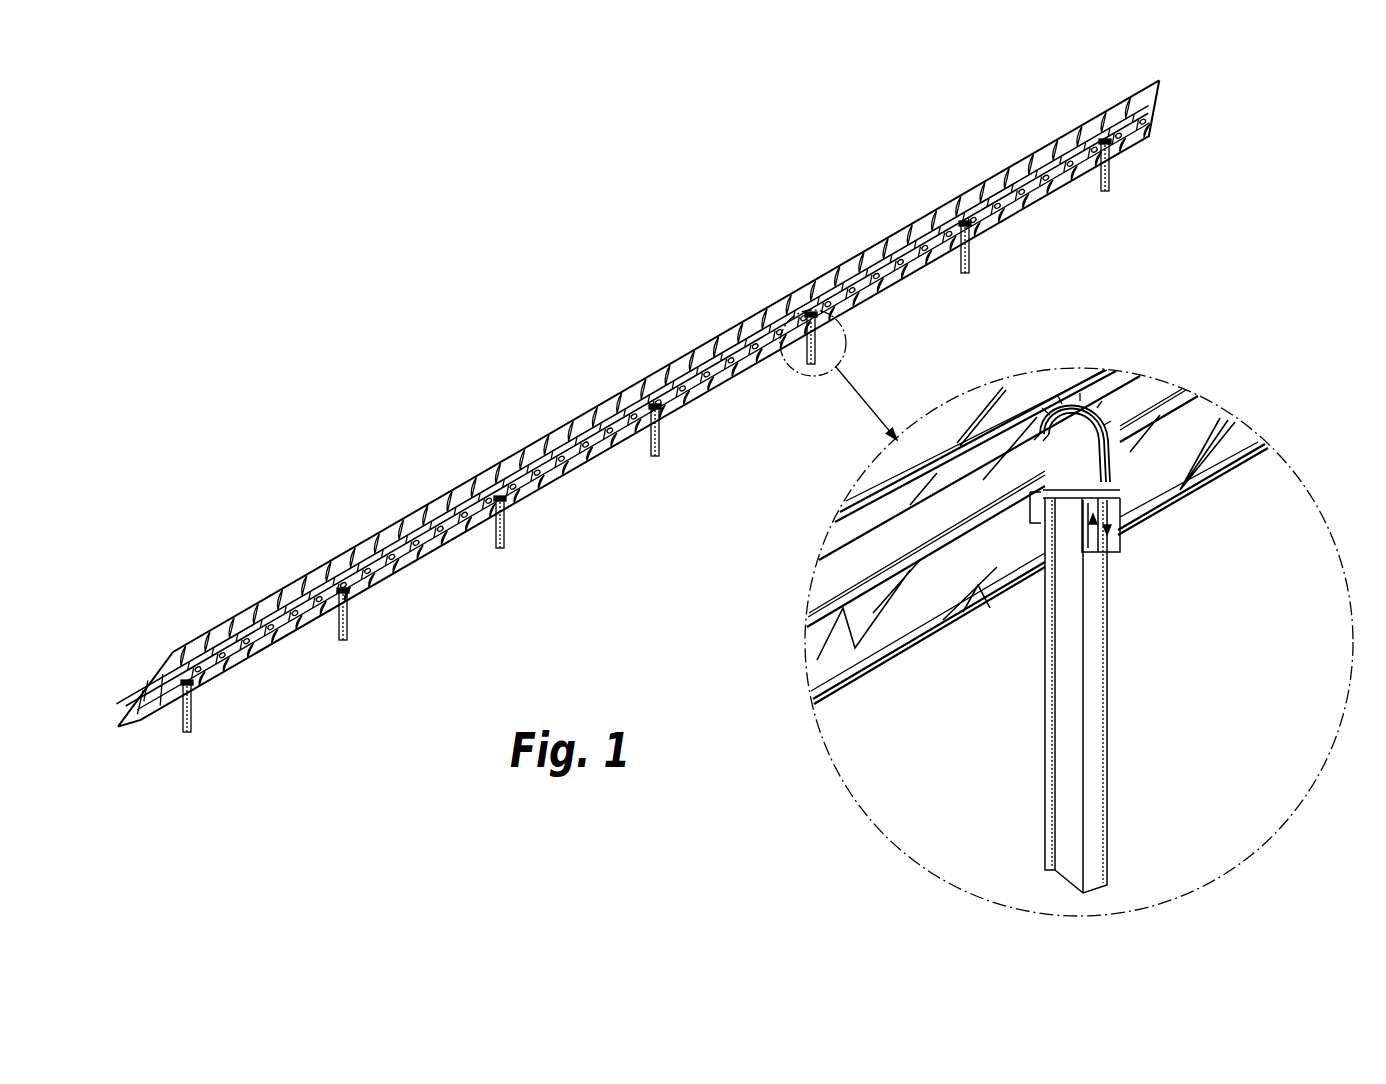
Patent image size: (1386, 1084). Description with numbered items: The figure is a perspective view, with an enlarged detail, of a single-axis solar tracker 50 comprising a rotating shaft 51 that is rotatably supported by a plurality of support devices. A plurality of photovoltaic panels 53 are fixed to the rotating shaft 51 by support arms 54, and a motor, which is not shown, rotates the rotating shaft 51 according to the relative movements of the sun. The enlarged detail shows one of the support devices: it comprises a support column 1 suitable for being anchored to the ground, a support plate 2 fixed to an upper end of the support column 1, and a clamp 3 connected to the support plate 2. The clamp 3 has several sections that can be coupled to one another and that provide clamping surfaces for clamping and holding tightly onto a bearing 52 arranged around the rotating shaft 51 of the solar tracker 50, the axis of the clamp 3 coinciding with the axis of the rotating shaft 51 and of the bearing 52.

The support column 1 is at (496, 535).
The support plate 2 is at (1132, 543).
The clamp 3 is at (1120, 467).
The solar tracker 50 is at (537, 282).
The rotating shaft 51 is at (423, 552).
The bearing 52 is at (1042, 422).
The photovoltaic panels 53 is at (540, 446).
The support arms 54 is at (518, 468).